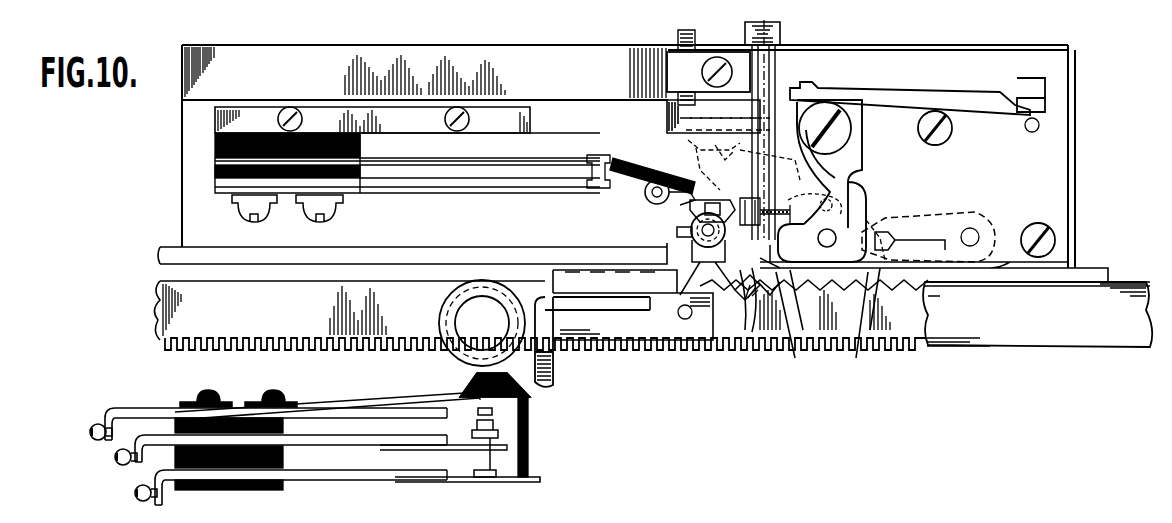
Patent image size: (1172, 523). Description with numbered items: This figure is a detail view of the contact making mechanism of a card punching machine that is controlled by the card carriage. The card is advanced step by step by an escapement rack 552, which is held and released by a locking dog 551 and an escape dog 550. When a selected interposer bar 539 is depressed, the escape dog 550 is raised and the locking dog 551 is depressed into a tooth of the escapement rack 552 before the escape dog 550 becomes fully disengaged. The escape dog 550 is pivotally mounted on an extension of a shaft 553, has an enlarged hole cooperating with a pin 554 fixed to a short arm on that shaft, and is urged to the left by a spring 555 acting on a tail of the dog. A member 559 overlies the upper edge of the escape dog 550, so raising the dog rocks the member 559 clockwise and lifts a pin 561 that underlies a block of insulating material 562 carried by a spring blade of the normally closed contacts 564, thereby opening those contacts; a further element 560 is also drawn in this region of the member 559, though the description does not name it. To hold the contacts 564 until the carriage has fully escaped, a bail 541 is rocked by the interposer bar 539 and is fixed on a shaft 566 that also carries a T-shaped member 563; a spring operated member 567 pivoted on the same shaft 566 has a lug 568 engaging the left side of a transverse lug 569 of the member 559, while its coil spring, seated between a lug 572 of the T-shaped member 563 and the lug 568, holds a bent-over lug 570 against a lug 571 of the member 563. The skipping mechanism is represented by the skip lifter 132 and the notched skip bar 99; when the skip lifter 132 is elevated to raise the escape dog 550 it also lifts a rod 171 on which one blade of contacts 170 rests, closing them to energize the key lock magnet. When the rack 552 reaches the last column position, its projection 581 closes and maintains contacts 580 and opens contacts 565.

The skip bar 99 is at (912, 298).
The skip lifter 132 is at (764, 297).
The contacts 170 is at (780, 33).
The rod 171 is at (758, 54).
The interposer bar 539 is at (808, 95).
The bail 541 is at (770, 138).
The escape dog 550 is at (745, 335).
The locking dog 551 is at (860, 320).
The escapement rack 552 is at (925, 300).
The shaft 553 is at (832, 240).
The pin 554 is at (794, 324).
The spring 555 is at (813, 237).
The member 559 is at (845, 160).
The pin 560 is at (800, 203).
The pin 561 is at (646, 195).
The block of insulating material 562 is at (660, 172).
The T-shaped member 563 is at (700, 290).
The contacts 564 is at (580, 182).
The contacts 565 is at (500, 465).
The shaft 566 is at (667, 256).
The spring operated member 567 is at (755, 150).
The lug 568 is at (692, 208).
The transverse lug 569 is at (770, 120).
The bent-over lug 570 is at (760, 218).
The lug 571 is at (700, 265).
The lug 572 is at (677, 233).
The contacts 580 is at (528, 425).
The projection 581 is at (555, 373).